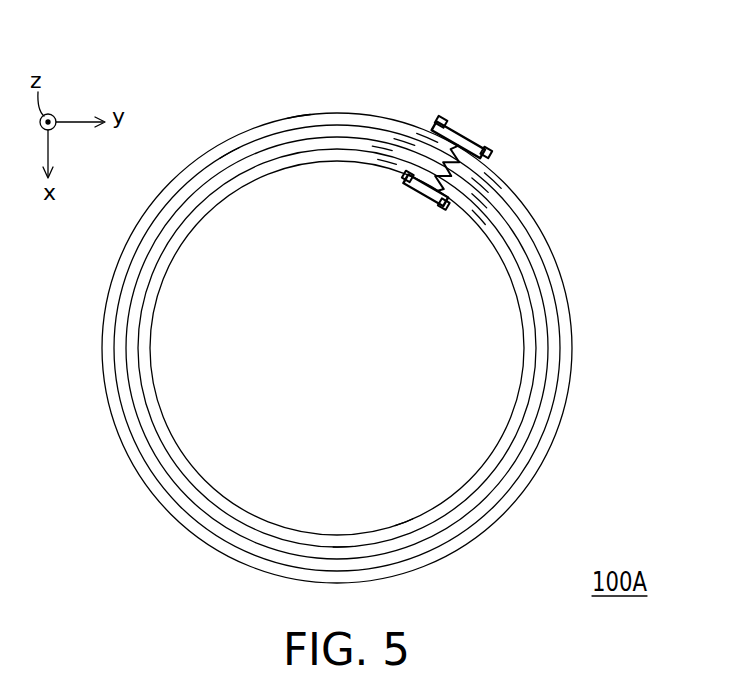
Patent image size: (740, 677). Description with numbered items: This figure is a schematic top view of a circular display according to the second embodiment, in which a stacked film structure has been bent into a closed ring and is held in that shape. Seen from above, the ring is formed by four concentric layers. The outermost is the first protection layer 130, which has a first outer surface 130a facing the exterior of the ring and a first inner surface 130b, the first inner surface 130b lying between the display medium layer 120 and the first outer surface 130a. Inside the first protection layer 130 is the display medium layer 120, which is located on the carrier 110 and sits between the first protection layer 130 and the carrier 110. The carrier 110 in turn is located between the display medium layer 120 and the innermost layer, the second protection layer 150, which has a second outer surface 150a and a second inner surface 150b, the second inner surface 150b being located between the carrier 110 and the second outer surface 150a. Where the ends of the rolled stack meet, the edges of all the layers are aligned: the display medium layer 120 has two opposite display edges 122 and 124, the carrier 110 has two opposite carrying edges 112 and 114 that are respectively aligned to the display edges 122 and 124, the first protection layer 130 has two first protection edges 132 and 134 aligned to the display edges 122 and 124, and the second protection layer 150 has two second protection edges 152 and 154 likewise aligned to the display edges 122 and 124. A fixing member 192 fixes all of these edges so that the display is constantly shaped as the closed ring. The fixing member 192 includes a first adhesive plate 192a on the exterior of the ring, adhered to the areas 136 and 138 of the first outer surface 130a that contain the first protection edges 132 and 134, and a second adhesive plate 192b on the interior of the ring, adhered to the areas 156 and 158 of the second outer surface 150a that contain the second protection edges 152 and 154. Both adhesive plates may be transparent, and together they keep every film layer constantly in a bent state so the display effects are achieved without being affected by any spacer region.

The carrier 110 is at (540, 350).
The carrying edge 112 is at (482, 198).
The carrying edge 114 is at (383, 145).
The display medium layer 120 is at (552, 315).
The display edge 122 is at (482, 183).
The display edge 124 is at (405, 140).
The first protection layer 130 is at (558, 283).
The first outer surface 130a is at (298, 112).
The first inner surface 130b is at (227, 148).
The first protection edge 132 is at (498, 175).
The first protection edge 134 is at (428, 136).
The area having the first protection edge 136 is at (445, 126).
The area having the first protection edge 138 is at (483, 142).
The second protection layer 150 is at (523, 393).
The second outer surface 150a is at (403, 520).
The second inner surface 150b is at (343, 543).
The second protection edge 152 is at (476, 220).
The second protection edge 154 is at (385, 163).
The area having the second protection edge 156 is at (409, 184).
The area having the second protection edge 158 is at (443, 210).
The fixing member 192 is at (443, 186).
The first adhesive plate 192a is at (465, 133).
The second adhesive plate 192b is at (427, 200).